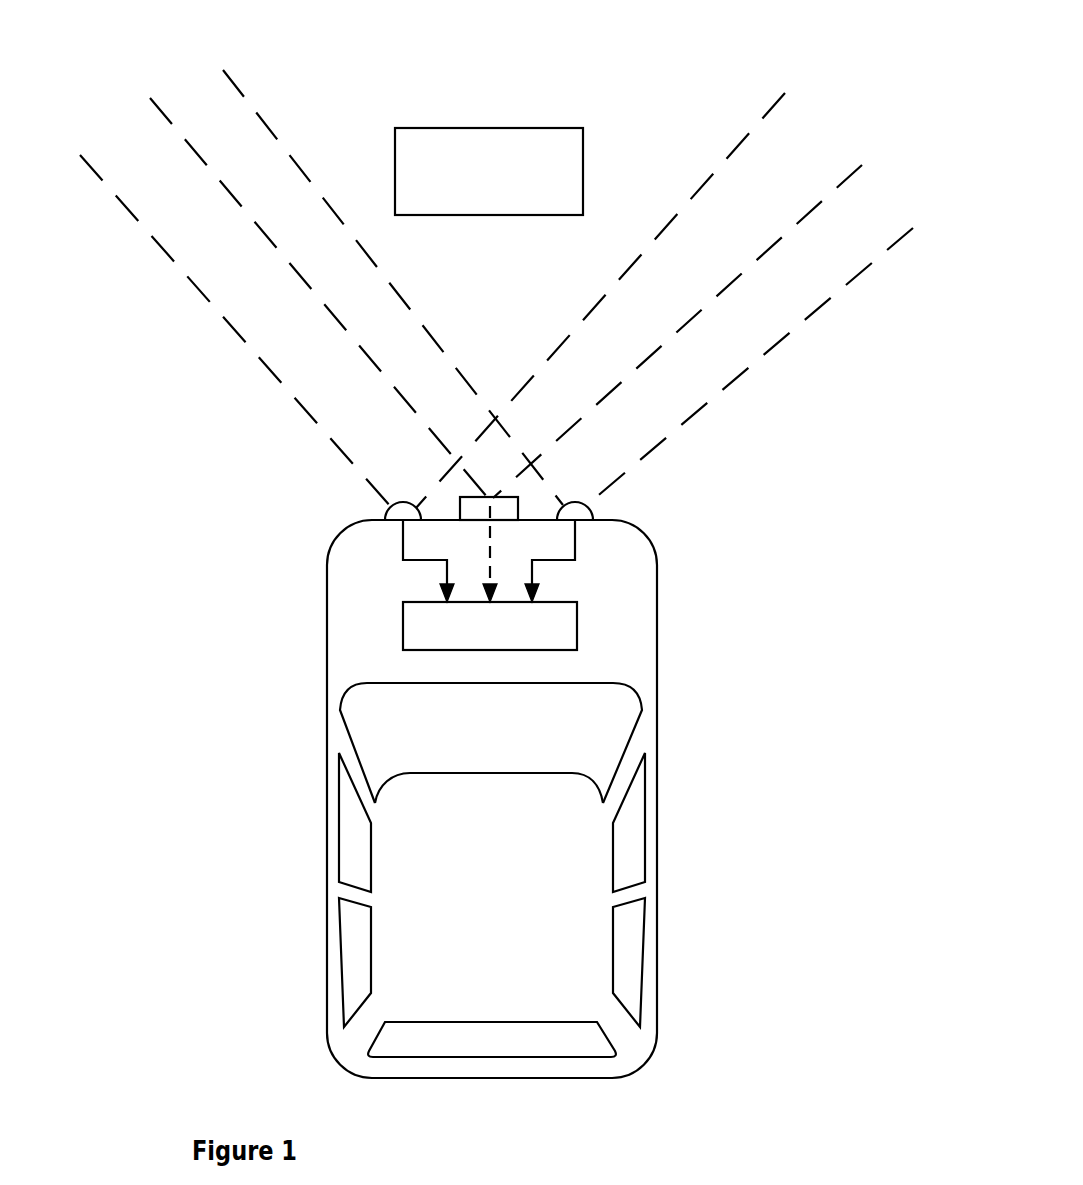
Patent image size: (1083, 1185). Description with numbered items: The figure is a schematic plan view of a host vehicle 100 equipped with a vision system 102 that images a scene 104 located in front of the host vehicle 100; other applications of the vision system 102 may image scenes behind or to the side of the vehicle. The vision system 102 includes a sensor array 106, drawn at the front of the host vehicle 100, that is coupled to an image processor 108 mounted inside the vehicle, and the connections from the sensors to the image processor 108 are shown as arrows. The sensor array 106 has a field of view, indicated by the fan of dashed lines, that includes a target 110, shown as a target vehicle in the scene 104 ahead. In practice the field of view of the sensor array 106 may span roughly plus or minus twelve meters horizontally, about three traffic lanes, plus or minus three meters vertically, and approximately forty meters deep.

The host vehicle 100 is at (670, 605).
The vision system 102 is at (693, 528).
The scene 104 is at (732, 23).
The sensor array 106 is at (165, 470).
The image processor 108 is at (577, 635).
The target 110 is at (525, 128).